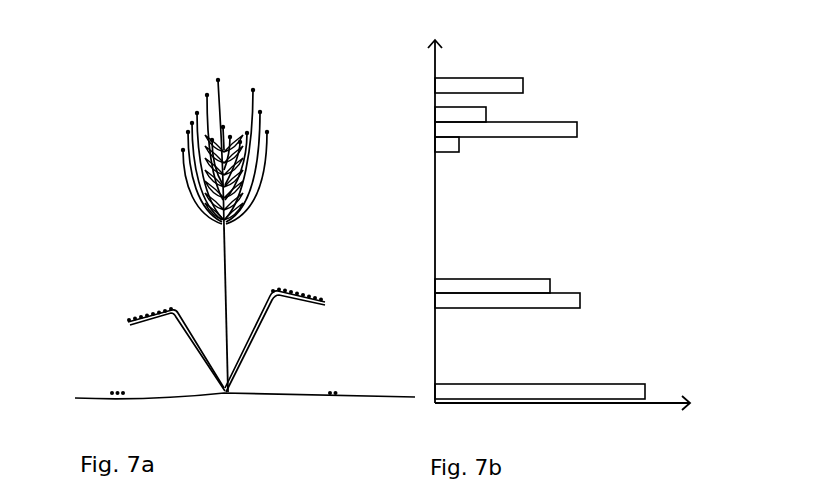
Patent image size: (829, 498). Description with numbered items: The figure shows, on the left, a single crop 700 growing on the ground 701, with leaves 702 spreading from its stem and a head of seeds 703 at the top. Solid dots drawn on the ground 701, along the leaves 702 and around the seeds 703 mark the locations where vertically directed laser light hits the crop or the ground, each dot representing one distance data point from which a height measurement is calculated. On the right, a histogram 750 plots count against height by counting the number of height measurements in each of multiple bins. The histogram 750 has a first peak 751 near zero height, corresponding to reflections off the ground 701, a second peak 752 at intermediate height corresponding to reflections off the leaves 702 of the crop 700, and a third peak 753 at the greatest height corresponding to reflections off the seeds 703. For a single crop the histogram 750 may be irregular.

In FIG. 7A, the crop 700 is at (217, 220).
In FIG. 7A, the ground 701 is at (86, 397).
In FIG. 7A, the leaves 702 is at (133, 308).
In FIG. 7A, the seeds 703 is at (206, 206).
In FIG. 7B, the histogram 750 is at (567, 226).
In FIG. 7B, the first peak 751 is at (645, 388).
In FIG. 7B, the second peak 752 is at (580, 296).
In FIG. 7B, the third peak 753 is at (577, 125).